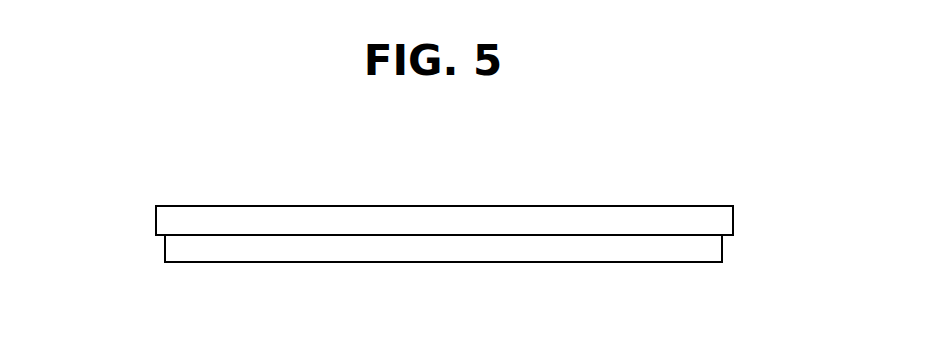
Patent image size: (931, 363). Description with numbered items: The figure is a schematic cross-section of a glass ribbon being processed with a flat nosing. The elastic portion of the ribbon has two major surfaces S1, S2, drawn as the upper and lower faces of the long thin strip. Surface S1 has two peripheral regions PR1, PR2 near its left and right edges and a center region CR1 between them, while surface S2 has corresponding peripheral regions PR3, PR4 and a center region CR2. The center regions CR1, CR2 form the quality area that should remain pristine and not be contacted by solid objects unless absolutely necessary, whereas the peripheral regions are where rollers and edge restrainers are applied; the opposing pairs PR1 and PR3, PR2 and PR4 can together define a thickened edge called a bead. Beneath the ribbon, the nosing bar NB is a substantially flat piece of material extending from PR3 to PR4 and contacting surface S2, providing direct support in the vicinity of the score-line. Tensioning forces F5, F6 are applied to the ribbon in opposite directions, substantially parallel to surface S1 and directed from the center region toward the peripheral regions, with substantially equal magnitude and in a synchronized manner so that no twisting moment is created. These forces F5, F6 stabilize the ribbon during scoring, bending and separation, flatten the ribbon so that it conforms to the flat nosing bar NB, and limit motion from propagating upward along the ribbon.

The first major surface S1 is at (147, 204).
The second major surface S2 is at (742, 240).
The tensioning force F5 is at (177, 221).
The tensioning force F6 is at (713, 221).
The peripheral region PR1 is at (185, 198).
The peripheral region PR2 is at (708, 198).
The peripheral region PR3 is at (185, 245).
The peripheral region PR4 is at (708, 245).
The center region CR1 is at (442, 198).
The center region CR2 is at (442, 245).
The nosing bar NB is at (590, 260).